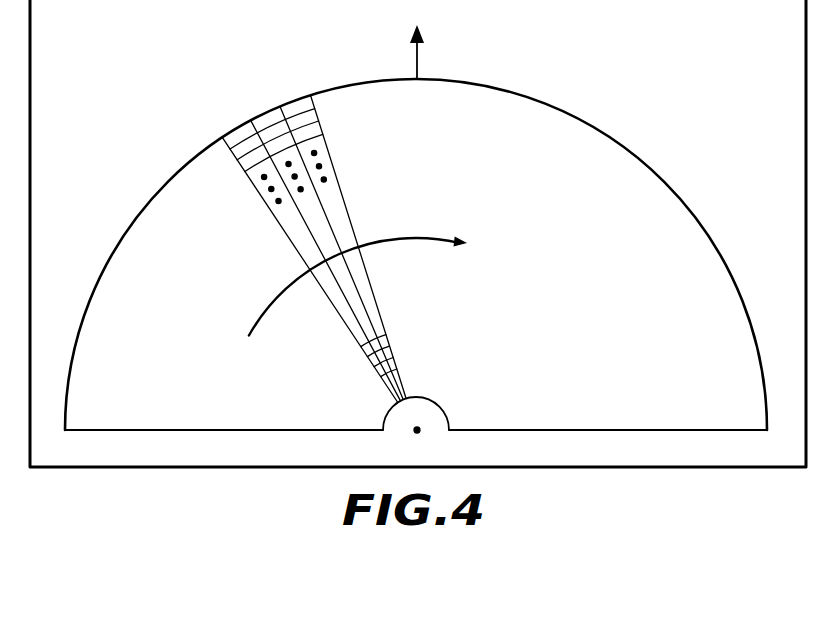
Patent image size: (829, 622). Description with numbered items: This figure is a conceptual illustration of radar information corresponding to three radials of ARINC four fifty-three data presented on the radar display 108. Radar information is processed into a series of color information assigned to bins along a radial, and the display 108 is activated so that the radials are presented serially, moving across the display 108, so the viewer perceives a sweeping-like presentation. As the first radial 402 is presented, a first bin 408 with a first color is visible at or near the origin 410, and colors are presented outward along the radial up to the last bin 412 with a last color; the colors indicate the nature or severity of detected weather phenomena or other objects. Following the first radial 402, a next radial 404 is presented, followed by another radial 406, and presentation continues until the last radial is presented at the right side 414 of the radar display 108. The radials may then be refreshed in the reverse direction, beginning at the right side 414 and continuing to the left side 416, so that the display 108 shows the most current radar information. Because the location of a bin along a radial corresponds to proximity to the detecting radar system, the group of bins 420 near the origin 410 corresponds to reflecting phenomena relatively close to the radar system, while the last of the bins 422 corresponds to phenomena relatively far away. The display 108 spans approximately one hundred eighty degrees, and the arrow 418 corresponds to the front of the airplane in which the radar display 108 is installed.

The radar display 108 is at (767, 46).
The first radial 402 is at (225, 112).
The next radial 404 is at (258, 100).
The another radial 406 is at (285, 87).
The first bin 408 is at (382, 398).
The origin 410 is at (434, 441).
The last bin 412 is at (236, 139).
The right side 414 is at (606, 420).
The left side 416 is at (111, 418).
The arrow 418 is at (417, 55).
The group of bins 420 is at (385, 333).
The last of the bins 422 is at (312, 140).